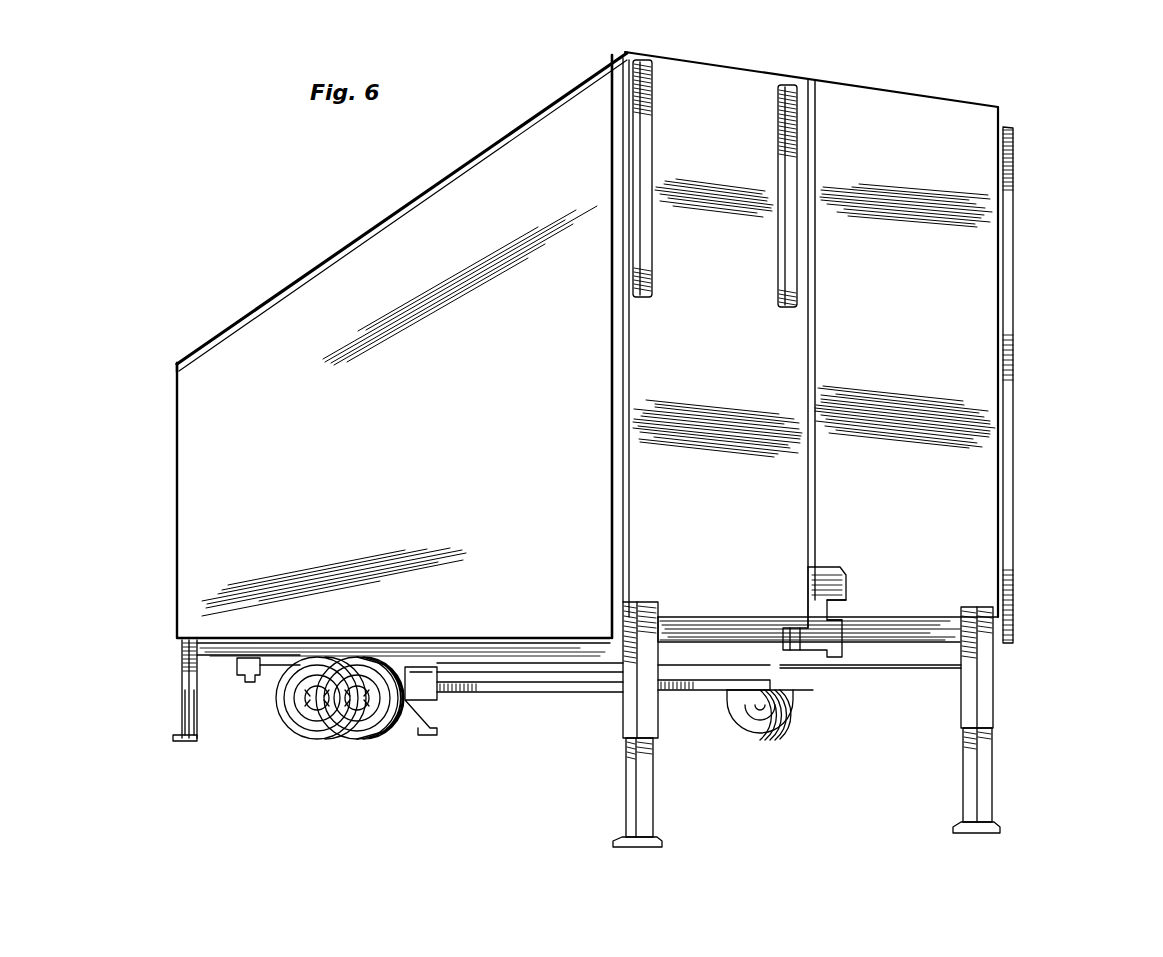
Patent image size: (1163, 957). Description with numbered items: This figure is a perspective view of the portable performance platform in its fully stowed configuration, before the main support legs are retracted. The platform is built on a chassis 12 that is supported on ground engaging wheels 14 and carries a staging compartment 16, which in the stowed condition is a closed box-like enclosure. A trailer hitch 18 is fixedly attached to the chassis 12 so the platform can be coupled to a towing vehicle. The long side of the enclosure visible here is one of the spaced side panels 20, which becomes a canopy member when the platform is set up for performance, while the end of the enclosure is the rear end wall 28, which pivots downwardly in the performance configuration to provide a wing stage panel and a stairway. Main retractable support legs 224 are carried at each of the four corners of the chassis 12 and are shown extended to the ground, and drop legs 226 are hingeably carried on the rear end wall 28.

The chassis 12 is at (942, 78).
The ground engaging wheels 14 is at (370, 757).
The staging compartment 16 is at (358, 235).
The trailer hitch 18 is at (255, 683).
The side panel 20 is at (218, 440).
The rear end wall 28 is at (733, 97).
The main retractable support legs 224 is at (645, 713).
The drop legs 226 is at (650, 122).